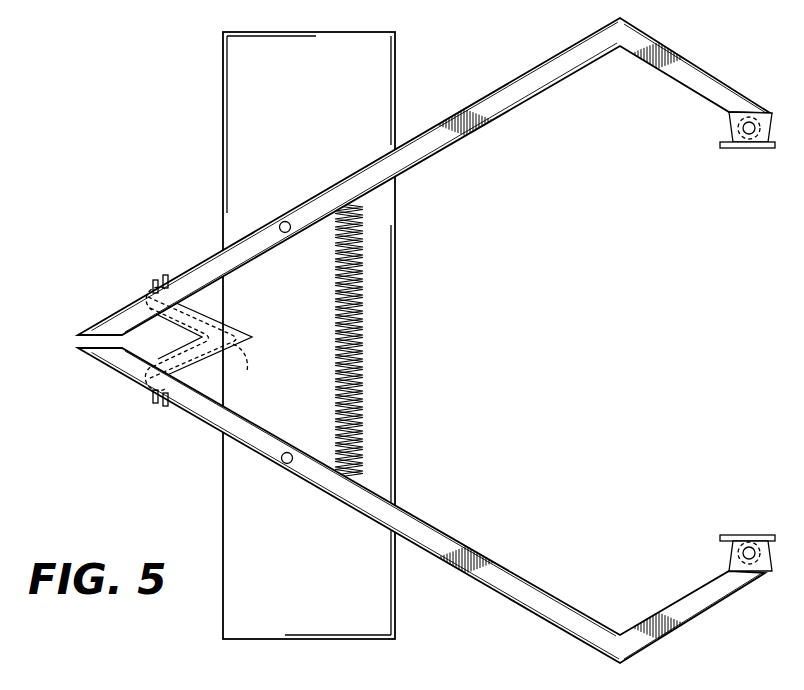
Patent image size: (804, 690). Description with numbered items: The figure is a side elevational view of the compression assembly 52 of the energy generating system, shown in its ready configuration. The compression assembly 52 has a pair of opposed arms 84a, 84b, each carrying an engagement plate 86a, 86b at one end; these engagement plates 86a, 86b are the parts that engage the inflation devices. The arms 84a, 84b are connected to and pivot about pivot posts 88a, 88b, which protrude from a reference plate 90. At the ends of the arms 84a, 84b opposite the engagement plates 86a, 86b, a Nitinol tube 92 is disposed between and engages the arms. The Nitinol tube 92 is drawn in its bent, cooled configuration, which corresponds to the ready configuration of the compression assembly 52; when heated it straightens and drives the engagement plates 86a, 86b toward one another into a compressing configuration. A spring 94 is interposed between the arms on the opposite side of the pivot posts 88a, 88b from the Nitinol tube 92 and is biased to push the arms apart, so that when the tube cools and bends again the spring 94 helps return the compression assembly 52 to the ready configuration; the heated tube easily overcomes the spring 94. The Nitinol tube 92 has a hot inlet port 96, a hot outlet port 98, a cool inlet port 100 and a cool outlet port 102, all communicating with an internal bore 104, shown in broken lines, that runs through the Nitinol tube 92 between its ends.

The compression assembly 52 is at (128, 98).
The arm 84a is at (572, 45).
The arm 84b is at (570, 635).
The engagement plate 86a is at (728, 148).
The engagement plate 86b is at (728, 534).
The pivot post 88a is at (285, 221).
The pivot post 88b is at (287, 464).
The reference plate 90 is at (382, 32).
The Nitinol tube 92 is at (253, 340).
The spring 94 is at (366, 338).
The hot inlet port 96 is at (153, 283).
The hot outlet port 98 is at (153, 403).
The cool inlet port 100 is at (168, 406).
The cool outlet port 102 is at (167, 276).
The internal bore 104 is at (219, 339).